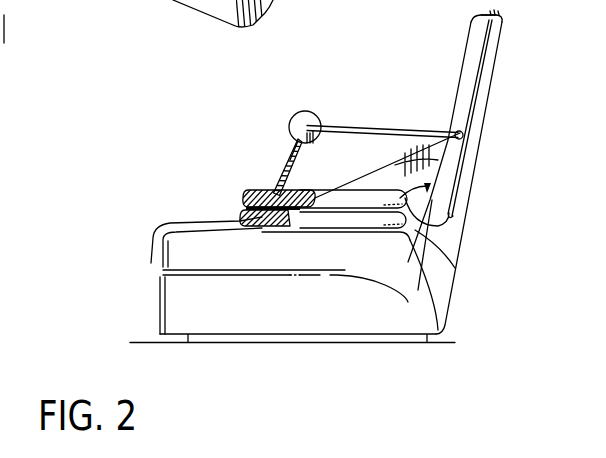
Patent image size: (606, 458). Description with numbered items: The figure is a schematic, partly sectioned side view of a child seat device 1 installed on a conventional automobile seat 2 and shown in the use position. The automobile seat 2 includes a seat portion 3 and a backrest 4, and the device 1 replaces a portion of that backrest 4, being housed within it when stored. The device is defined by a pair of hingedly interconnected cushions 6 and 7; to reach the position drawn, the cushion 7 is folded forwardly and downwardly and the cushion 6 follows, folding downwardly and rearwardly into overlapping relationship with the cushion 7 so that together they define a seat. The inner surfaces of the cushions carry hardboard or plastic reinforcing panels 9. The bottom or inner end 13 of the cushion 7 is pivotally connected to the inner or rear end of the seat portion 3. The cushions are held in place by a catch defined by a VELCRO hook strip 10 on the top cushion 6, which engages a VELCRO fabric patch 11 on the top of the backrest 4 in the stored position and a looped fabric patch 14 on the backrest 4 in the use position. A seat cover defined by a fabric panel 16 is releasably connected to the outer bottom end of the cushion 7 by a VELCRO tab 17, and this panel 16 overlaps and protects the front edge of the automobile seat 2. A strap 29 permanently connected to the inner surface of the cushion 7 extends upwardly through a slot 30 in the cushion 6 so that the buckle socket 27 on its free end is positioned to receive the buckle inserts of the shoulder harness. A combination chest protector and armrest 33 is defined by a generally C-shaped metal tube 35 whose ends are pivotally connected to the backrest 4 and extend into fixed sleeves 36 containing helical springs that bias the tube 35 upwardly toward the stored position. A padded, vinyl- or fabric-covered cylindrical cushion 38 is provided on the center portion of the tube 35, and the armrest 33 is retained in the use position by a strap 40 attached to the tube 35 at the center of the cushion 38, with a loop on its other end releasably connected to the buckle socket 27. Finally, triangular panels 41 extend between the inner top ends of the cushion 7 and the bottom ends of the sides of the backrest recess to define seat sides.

The seat device 1 is at (187, 138).
The automobile seat 2 is at (452, 305).
The seat portion 3 is at (217, 253).
The backrest 4 is at (470, 57).
The cushion 6 is at (243, 193).
The cushion 7 is at (355, 222).
The reinforcing panels 9 is at (238, 217).
The strip 10 is at (457, 257).
The fabric patch 11 is at (487, 12).
The inner end of cushion 13 is at (425, 190).
The looped fabric patch 14 is at (430, 191).
The fabric panel 16 is at (153, 242).
The VELCRO tab 17 is at (253, 222).
The buckle socket 27 is at (276, 188).
The strap 29 is at (283, 184).
The slot 30 is at (295, 226).
The combination chest protector and armrest 33 is at (312, 112).
The metal tube 35 is at (360, 128).
The sleeves 36 is at (460, 131).
The cylindrical cushion 38 is at (290, 119).
The strap 40 is at (292, 160).
The triangular panels 41 is at (438, 160).